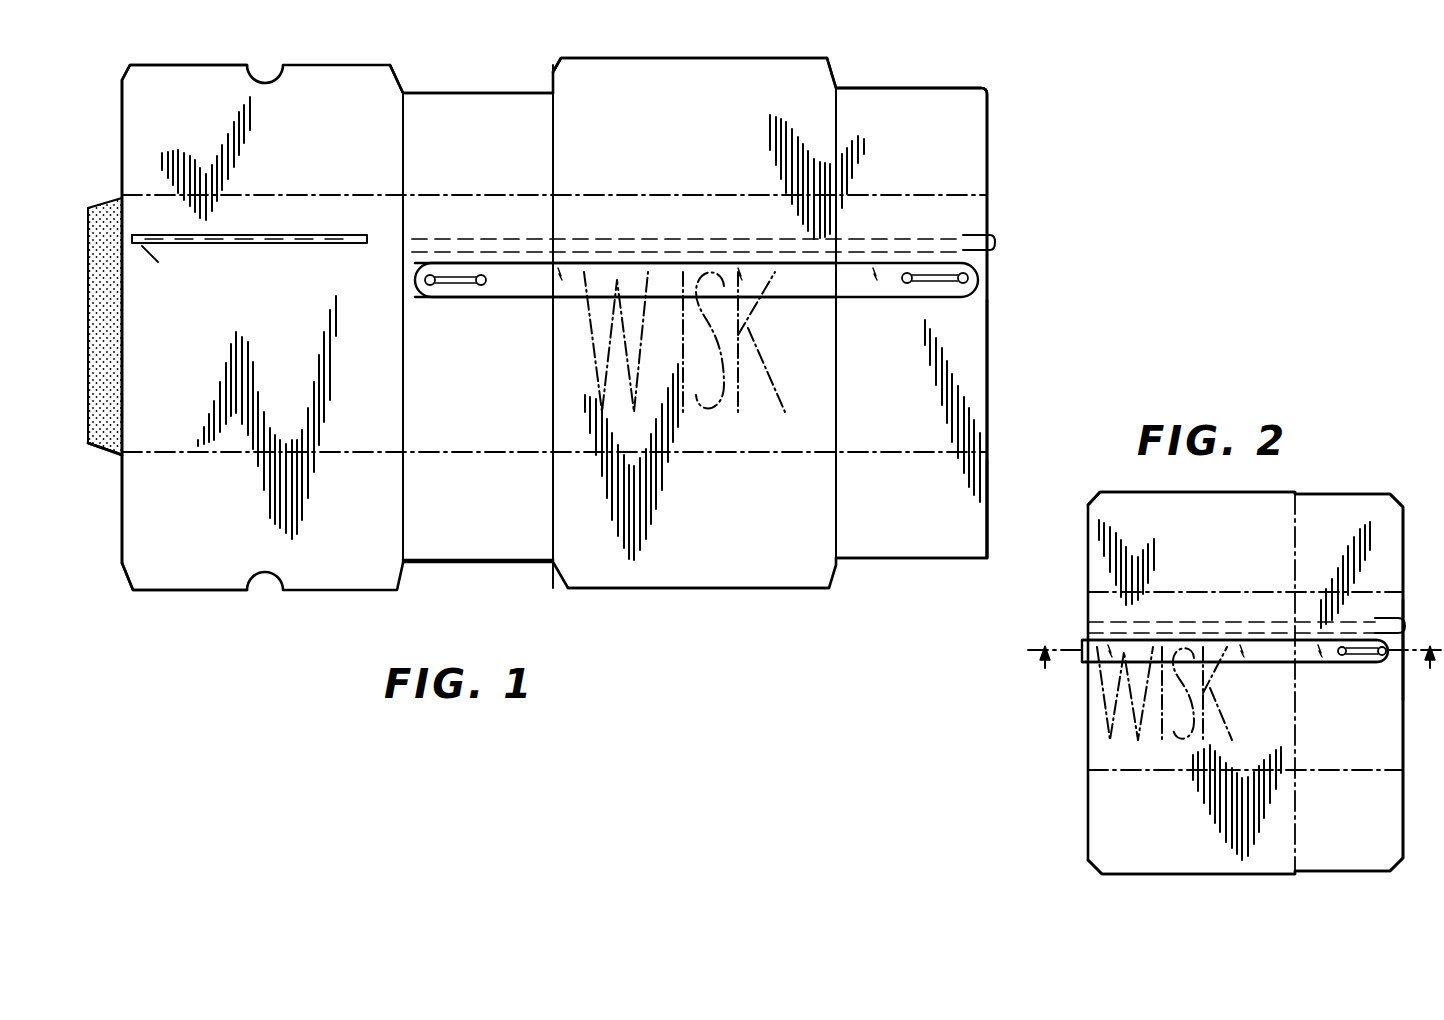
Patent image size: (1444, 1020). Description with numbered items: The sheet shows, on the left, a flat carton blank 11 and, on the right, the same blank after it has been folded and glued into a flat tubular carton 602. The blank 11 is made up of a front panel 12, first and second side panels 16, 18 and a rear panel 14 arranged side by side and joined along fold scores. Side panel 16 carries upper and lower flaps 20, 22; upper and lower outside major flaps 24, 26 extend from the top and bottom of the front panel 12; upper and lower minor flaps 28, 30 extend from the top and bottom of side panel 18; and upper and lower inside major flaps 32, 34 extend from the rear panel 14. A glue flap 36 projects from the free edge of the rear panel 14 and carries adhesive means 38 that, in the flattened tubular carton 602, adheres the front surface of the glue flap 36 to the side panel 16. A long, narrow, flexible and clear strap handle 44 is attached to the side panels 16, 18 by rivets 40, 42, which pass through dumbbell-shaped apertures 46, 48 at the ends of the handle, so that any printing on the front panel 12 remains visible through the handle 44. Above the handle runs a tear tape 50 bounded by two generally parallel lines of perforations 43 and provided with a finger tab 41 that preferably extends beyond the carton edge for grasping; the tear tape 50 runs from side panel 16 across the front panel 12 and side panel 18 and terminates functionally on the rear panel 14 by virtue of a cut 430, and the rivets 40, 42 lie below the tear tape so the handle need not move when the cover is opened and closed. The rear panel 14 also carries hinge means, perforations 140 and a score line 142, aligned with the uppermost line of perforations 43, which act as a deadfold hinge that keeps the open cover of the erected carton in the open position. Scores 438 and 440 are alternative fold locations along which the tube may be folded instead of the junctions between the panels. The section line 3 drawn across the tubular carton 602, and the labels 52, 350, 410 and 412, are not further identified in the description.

In FIG. 1, the carton blank 11 is at (148, 601).
In FIG. 1, the front panel 12 is at (787, 440).
In FIG. 2, the front panel 12 is at (1158, 769).
In FIG. 1, the rear panel 14 is at (120, 457).
In FIG. 1, the first side panel 16 is at (968, 363).
In FIG. 2, the first side panel 16 is at (1384, 745).
In FIG. 1, the second side panel 18 is at (513, 442).
In FIG. 1, the upper flap 20 is at (940, 120).
In FIG. 2, the upper flap 20 is at (1367, 522).
In FIG. 1, the lower flap 22 is at (980, 498).
In FIG. 2, the lower flap 22 is at (1388, 813).
In FIG. 1, the upper outside major flap 24 is at (677, 77).
In FIG. 2, the upper outside major flap 24 is at (1127, 505).
In FIG. 1, the lower outside major flap 26 is at (698, 575).
In FIG. 2, the lower outside major flap 26 is at (1121, 854).
In FIG. 1, the upper minor flap 28 is at (510, 118).
In FIG. 1, the lower minor flap 30 is at (447, 545).
In FIG. 1, the upper inside major flap 32 is at (137, 128).
In FIG. 1, the lower inside major flap 34 is at (137, 556).
In FIG. 1, the glue flap 36 is at (100, 263).
In FIG. 1, the adhesive means 38 is at (100, 418).
In FIG. 1, the rivet 40 is at (910, 280).
In FIG. 2, the rivet 40 is at (1342, 655).
In FIG. 1, the finger tab 41 is at (996, 241).
In FIG. 2, the finger tab 41 is at (1405, 631).
In FIG. 1, the rivet 42 is at (484, 272).
In FIG. 1, the lines of perforations 43 is at (622, 240).
In FIG. 1, the handle 44 is at (813, 285).
In FIG. 2, the handle 44 is at (1263, 652).
In FIG. 1, the dumbbell-shaped aperture 46 is at (983, 278).
In FIG. 2, the dumbbell-shaped aperture 46 is at (1386, 657).
In FIG. 1, the dumbbell-shaped aperture 48 is at (415, 282).
In FIG. 1, the tear tape 50 is at (749, 240).
In FIG. 2, the tear tape 50 is at (1345, 624).
In FIG. 1, the finger opening 52 is at (452, 287).
In FIG. 1, the perforations 140 is at (267, 237).
In FIG. 1, the score line 142 is at (155, 235).
In FIG. 1, the top closure flap 350 is at (462, 75).
In FIG. 1, the top fold line 410 is at (968, 194).
In FIG. 1, the bottom fold line 412 is at (860, 453).
In FIG. 2, the bottom fold line 412 is at (1310, 772).
In FIG. 1, the cut 430 is at (382, 252).
In FIG. 1, the score 438 is at (840, 403).
In FIG. 1, the score 440 is at (404, 402).
In FIG. 2, the tubular flattened carton 602 is at (1072, 627).
In FIG. 2, the section line 3- 3 is at (1236, 691).